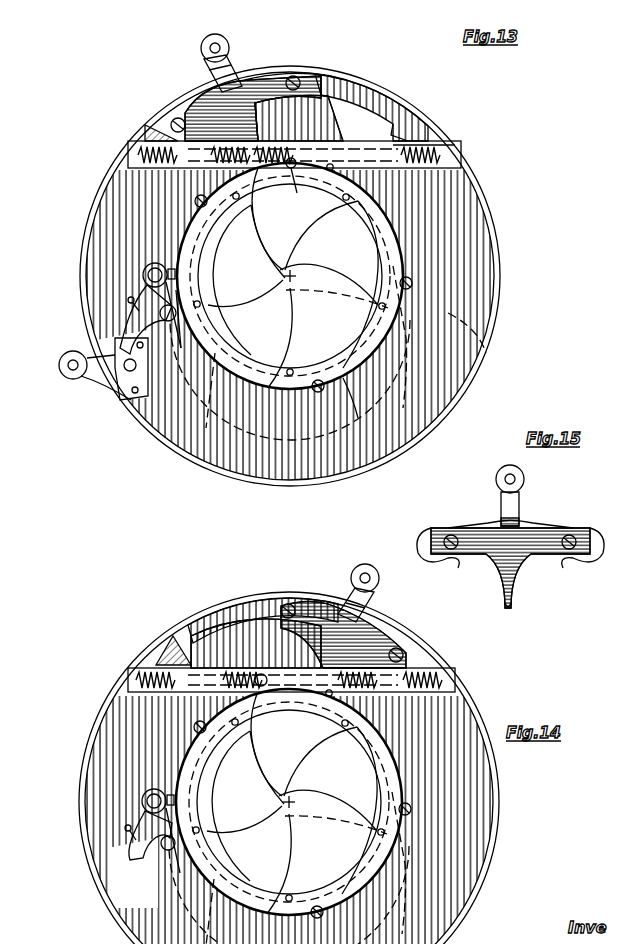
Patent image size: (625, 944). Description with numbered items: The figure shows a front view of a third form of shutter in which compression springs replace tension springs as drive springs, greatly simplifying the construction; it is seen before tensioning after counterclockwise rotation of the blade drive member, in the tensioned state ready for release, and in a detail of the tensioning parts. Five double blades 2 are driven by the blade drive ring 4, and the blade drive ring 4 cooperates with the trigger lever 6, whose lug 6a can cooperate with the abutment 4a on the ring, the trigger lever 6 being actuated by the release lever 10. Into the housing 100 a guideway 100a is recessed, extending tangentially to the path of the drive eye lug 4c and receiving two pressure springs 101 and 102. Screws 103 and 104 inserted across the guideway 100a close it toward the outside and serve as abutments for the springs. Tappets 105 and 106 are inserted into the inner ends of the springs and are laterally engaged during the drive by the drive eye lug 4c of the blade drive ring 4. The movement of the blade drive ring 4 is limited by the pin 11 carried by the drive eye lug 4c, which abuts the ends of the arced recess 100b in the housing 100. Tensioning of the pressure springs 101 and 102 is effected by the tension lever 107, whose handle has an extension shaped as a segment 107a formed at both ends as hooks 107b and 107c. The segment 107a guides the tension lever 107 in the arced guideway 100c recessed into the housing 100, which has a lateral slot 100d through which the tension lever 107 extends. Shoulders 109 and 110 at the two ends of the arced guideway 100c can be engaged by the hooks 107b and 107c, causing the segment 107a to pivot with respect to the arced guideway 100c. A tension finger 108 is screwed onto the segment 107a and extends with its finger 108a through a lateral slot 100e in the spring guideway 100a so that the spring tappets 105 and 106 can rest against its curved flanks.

In FIG. 13, the housing 100 is at (486, 229).
In FIG. 14, the housing 100 is at (486, 777).
In FIG. 13, the guideway 100a is at (424, 166).
In FIG. 14, the guideway 100a is at (345, 676).
In FIG. 13, the arced recess 100b is at (299, 118).
In FIG. 14, the arced recess 100b is at (288, 680).
In FIG. 13, the arced guideway 100c is at (383, 97).
In FIG. 13, the lateral slot 100d is at (350, 68).
In FIG. 14, the lateral slot 100d is at (228, 597).
In FIG. 13, the lateral slot 100e is at (335, 140).
In FIG. 14, the lateral slot 100e is at (336, 690).
In FIG. 13, the pressure spring 101 is at (250, 148).
In FIG. 14, the pressure spring 101 is at (270, 674).
In FIG. 13, the pressure spring 102 is at (418, 158).
In FIG. 14, the pressure spring 102 is at (330, 672).
In FIG. 13, the screw 103 is at (130, 140).
In FIG. 13, the screw 104 is at (452, 148).
In FIG. 13, the tappet 105 is at (225, 150).
In FIG. 13, the tappet 106 is at (285, 160).
In FIG. 13, the tension lever 107 is at (222, 36).
In FIG. 14, the tension lever 107 is at (342, 566).
In FIG. 15, the tension lever 107 is at (516, 470).
In FIG. 13, the segment 107a is at (252, 78).
In FIG. 15, the segment 107a is at (530, 518).
In FIG. 13, the hook 107b is at (295, 78).
In FIG. 15, the hook 107b is at (546, 550).
In FIG. 13, the hook 107c is at (163, 115).
In FIG. 15, the hook 107c is at (457, 550).
In FIG. 13, the tension finger 108 is at (200, 92).
In FIG. 14, the tension finger 108 is at (350, 630).
In FIG. 15, the tension finger 108 is at (485, 530).
In FIG. 13, the finger 108a is at (240, 222).
In FIG. 14, the finger 108a is at (300, 700).
In FIG. 15, the finger 108a is at (501, 598).
In FIG. 13, the shoulder 109 is at (390, 128).
In FIG. 13, the shoulder 110 is at (150, 160).
In FIG. 13, the pin 11 is at (256, 205).
In FIG. 14, the pin 11 is at (235, 715).
In FIG. 13, the double blade 2 is at (440, 305).
In FIG. 13, the blade drive ring 4 is at (352, 372).
In FIG. 13, the abutment 4a is at (173, 305).
In FIG. 14, the abutment 4a is at (170, 845).
In FIG. 14, the drive eye lug 4c is at (262, 662).
In FIG. 13, the trigger lever 6 is at (150, 288).
In FIG. 13, the lug 6a is at (170, 307).
In FIG. 14, the lug 6a is at (158, 838).
In FIG. 13, the release lever 10 is at (64, 372).